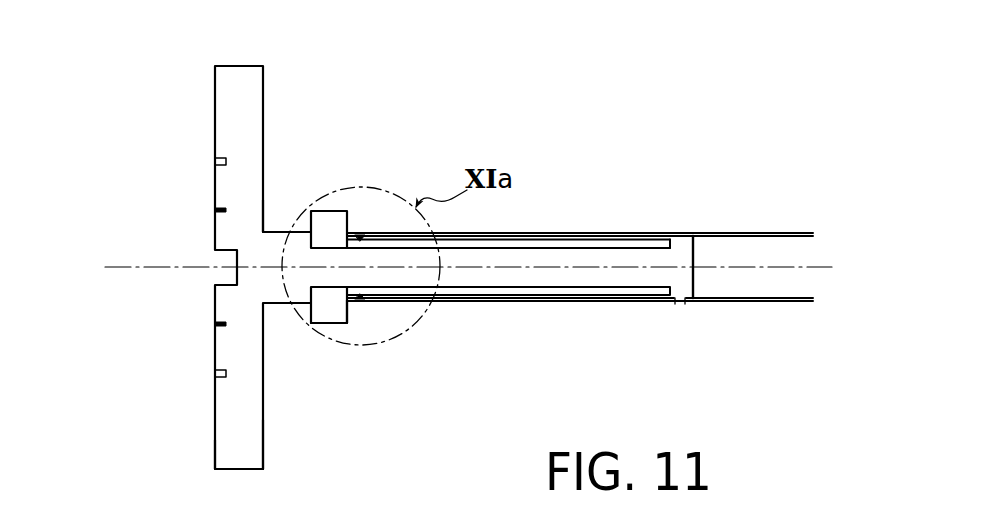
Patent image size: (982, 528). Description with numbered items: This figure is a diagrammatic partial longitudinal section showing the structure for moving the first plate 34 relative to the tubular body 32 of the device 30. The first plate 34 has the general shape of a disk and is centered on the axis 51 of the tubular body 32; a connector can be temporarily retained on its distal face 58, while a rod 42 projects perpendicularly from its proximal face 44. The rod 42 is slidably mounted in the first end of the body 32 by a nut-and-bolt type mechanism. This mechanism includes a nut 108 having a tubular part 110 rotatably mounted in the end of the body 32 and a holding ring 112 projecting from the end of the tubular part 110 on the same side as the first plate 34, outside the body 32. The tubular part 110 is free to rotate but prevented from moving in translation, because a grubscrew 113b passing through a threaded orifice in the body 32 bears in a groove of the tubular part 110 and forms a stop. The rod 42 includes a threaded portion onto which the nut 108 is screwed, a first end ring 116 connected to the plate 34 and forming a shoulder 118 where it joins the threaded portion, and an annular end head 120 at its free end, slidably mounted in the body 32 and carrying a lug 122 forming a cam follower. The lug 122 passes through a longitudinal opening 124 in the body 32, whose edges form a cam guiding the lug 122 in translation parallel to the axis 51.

The tube assembly 30 is at (641, 104).
The body 32 is at (778, 303).
The first plate 34 is at (266, 85).
The rod 42 is at (472, 299).
The proximal face 44 is at (264, 449).
The axis 51 is at (116, 268).
The distal face 58 is at (215, 456).
The nut 108 is at (341, 329).
The tubular part 110 is at (383, 235).
The holding ring 112 is at (318, 325).
The grubscrew 113b is at (360, 303).
The first end ring 116 is at (275, 232).
The shoulder 118 is at (318, 237).
The annular end head 120 is at (657, 235).
The lug 122 is at (684, 303).
The longitudinal opening 124 is at (573, 303).